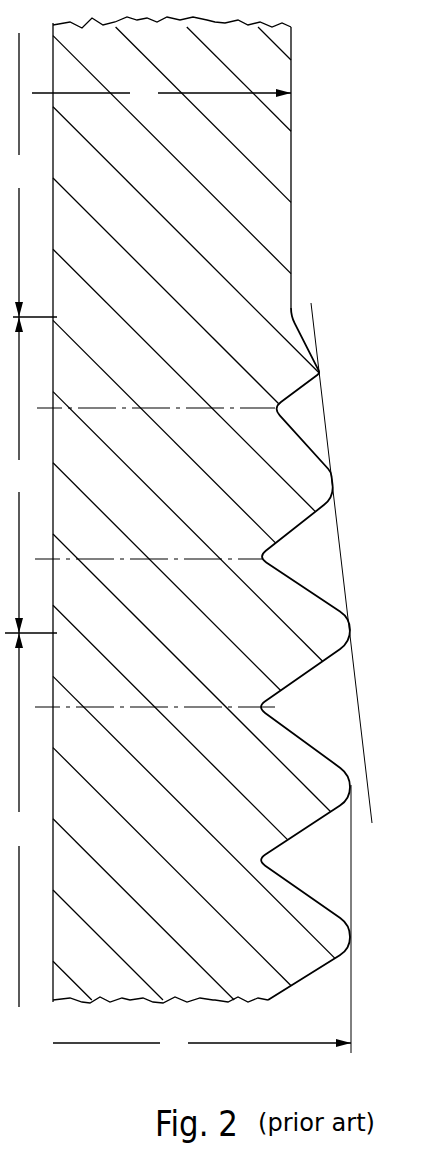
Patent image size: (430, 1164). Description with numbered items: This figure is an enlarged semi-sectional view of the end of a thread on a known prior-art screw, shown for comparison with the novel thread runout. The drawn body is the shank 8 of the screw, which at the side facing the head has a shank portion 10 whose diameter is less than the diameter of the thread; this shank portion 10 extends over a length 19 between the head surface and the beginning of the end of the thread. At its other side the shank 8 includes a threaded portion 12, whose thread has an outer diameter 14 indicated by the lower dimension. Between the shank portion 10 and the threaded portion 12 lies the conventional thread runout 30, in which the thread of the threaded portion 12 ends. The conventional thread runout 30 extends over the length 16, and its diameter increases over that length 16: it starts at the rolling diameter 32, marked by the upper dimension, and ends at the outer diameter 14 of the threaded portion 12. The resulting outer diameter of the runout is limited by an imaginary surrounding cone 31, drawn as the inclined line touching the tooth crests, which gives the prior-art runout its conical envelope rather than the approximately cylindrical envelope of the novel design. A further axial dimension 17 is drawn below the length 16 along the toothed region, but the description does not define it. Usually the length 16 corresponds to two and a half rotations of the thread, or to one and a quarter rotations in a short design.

The shank 8 is at (292, 198).
The shank portion 10 is at (225, 155).
The threaded portion 12 is at (278, 943).
The outer diameter 14 is at (202, 920).
The length 16 is at (140, 475).
The lower section length 17 is at (142, 820).
The length 19 is at (34, 175).
The conventional thread runout 30 is at (337, 439).
The imaginary surrounding cone 31 is at (340, 543).
The rolling diameter 32 is at (161, 93).